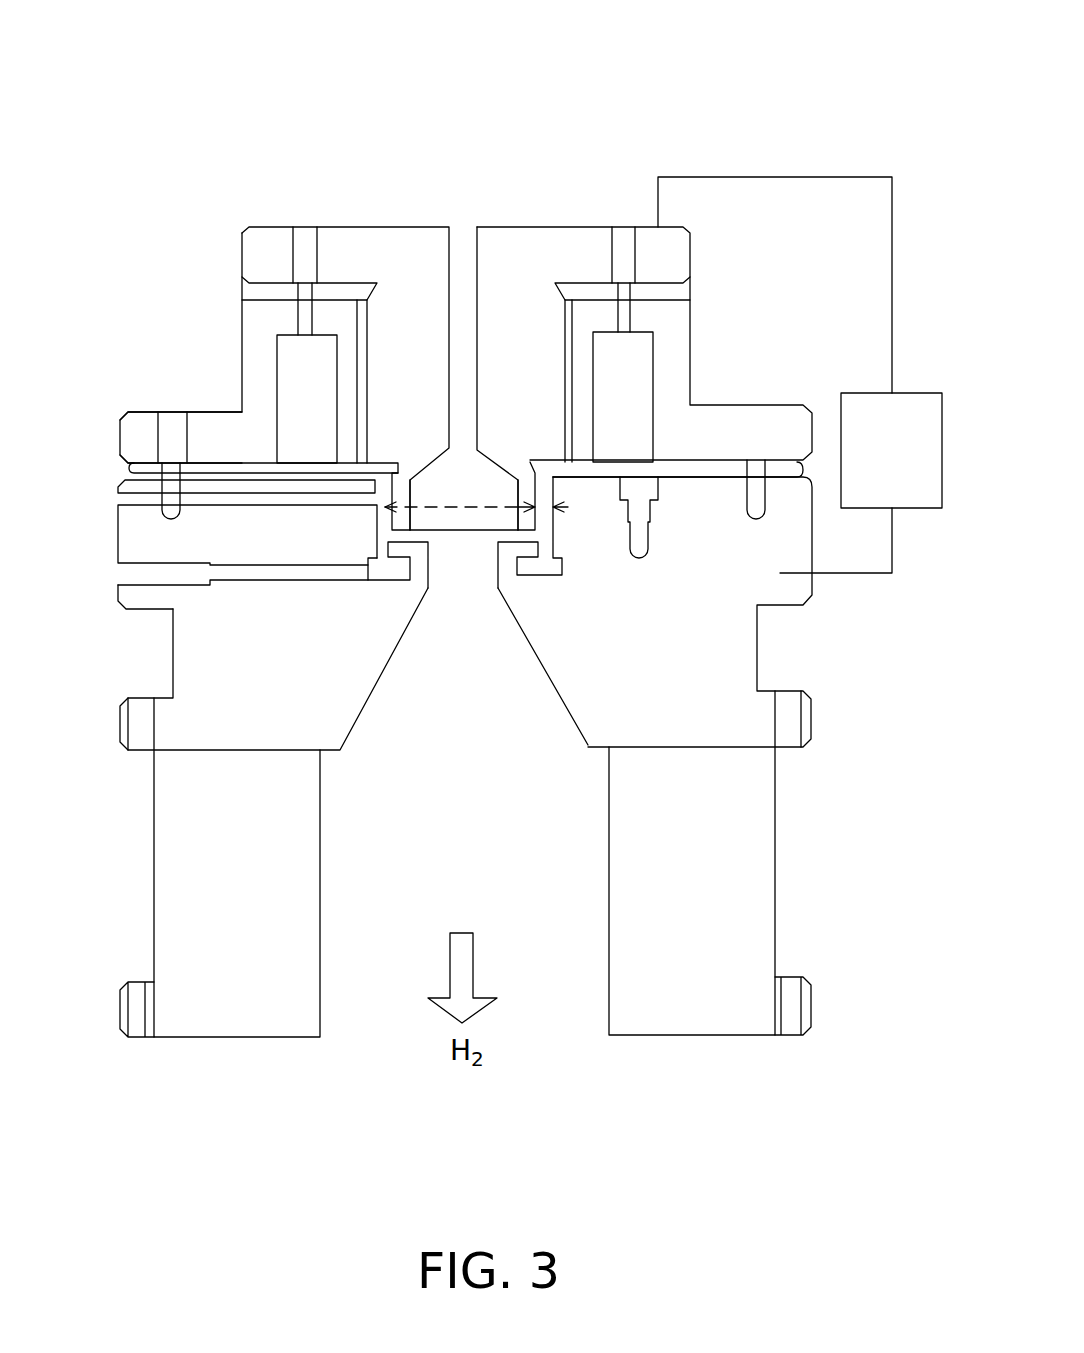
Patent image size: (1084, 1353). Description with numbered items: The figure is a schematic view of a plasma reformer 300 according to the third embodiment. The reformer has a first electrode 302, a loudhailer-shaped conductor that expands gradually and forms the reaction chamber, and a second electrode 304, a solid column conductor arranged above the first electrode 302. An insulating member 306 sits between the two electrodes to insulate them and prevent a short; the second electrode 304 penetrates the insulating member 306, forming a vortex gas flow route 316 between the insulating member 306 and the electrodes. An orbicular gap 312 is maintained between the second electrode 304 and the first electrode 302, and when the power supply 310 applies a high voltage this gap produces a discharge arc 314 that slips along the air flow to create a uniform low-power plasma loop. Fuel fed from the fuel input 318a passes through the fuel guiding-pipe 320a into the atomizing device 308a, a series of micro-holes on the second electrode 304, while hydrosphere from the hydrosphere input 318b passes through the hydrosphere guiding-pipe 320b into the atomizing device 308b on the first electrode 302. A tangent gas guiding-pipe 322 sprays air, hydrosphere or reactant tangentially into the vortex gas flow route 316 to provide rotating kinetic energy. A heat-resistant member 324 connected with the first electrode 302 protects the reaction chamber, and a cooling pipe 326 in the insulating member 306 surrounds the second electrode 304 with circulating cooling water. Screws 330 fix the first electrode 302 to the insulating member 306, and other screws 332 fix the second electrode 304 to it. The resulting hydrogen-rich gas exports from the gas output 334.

The plasma reformer 300 is at (830, 118).
The first electrode 302 is at (733, 642).
The second electrode 304 is at (522, 227).
The insulating member 306 is at (262, 318).
The atomizing device 308a is at (482, 502).
The atomizing device 308b is at (553, 567).
The power supply 310 is at (916, 393).
The orbicular gap 312 is at (547, 505).
The discharge arc 314 is at (393, 515).
The vortex gas flow route 316 is at (380, 533).
The fuel input 318a is at (465, 218).
The hydrosphere input 318b is at (130, 575).
The fuel guiding-pipe 320a is at (448, 272).
The hydrosphere guiding-pipe 320b is at (160, 588).
The tangent gas guiding-pipe 322 is at (125, 500).
The heat-resistant member 324 is at (747, 921).
The cooling pipe 326 is at (298, 363).
The screws 330 is at (170, 428).
The screws 332 is at (305, 243).
The gas output 334 is at (377, 978).